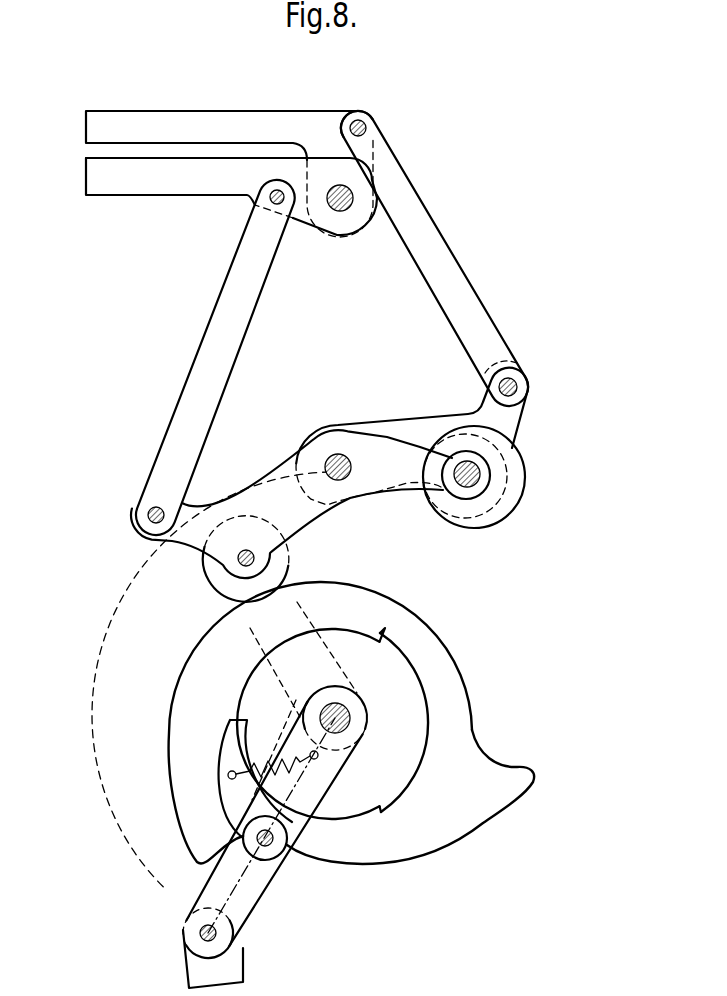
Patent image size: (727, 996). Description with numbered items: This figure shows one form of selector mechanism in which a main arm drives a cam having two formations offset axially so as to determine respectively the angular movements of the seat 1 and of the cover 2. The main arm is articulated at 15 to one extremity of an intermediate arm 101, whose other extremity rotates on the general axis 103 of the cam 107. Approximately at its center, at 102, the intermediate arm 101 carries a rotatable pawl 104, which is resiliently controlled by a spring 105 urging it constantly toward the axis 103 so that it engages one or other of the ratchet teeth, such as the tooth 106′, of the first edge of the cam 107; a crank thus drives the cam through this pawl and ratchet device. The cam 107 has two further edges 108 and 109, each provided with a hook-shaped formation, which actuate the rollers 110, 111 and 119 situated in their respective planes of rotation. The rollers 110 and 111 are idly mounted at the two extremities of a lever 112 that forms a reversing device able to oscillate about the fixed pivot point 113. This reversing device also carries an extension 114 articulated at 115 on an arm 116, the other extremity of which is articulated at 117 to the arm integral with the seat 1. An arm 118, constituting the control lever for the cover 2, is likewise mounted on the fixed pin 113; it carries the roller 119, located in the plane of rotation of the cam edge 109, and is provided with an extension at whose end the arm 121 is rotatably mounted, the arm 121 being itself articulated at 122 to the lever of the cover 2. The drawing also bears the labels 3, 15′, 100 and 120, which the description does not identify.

The seat 1 is at (143, 183).
The cover 2 is at (195, 125).
The pivot plate 3 is at (346, 207).
The articulation point 15 is at (220, 938).
The roller pivot 15′ is at (240, 548).
The cam disc 100 is at (228, 720).
The intermediate arm 101 is at (250, 895).
The pawl pivot 102 is at (233, 845).
The general axis of the cam 103 is at (352, 712).
The rotatable pawl 104 is at (230, 803).
The spring 105 is at (300, 812).
The ratchet tooth 106′ is at (390, 630).
The cam 107 is at (388, 774).
The cam edge 108 is at (175, 782).
The cam edge 109 is at (480, 807).
The roller 110 is at (230, 592).
The roller 111 is at (478, 518).
The lever 112 is at (293, 493).
The fixed pivot point 113 is at (343, 456).
The extension 114 is at (190, 540).
The articulation point 115 is at (145, 504).
The arm 116 is at (230, 300).
The articulation point 117 is at (270, 199).
The control lever arm 118 is at (427, 430).
The roller 119 is at (515, 496).
The pivot pin 120 is at (519, 386).
The arm 121 is at (455, 282).
The articulation point 122 is at (367, 128).